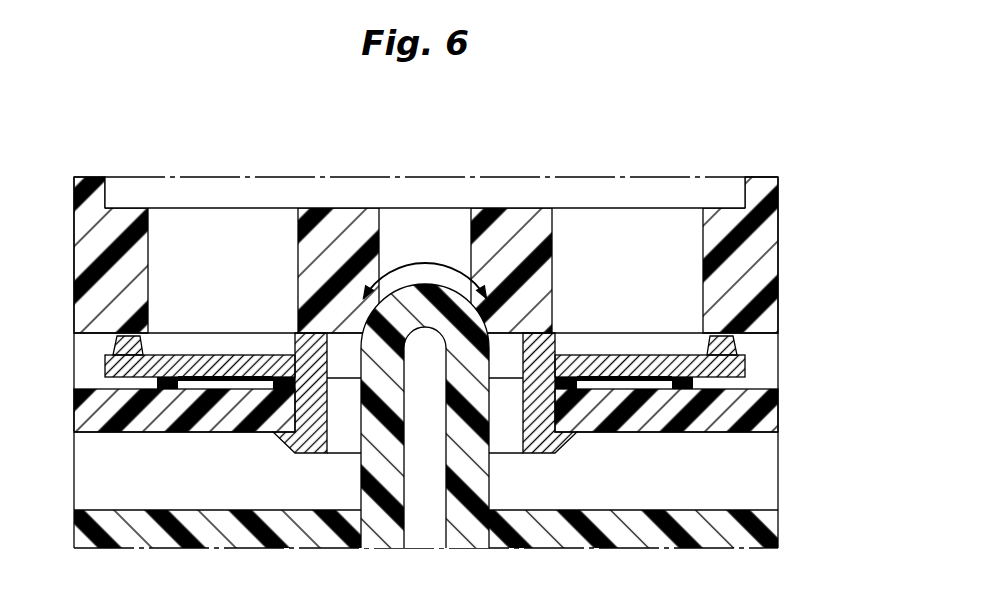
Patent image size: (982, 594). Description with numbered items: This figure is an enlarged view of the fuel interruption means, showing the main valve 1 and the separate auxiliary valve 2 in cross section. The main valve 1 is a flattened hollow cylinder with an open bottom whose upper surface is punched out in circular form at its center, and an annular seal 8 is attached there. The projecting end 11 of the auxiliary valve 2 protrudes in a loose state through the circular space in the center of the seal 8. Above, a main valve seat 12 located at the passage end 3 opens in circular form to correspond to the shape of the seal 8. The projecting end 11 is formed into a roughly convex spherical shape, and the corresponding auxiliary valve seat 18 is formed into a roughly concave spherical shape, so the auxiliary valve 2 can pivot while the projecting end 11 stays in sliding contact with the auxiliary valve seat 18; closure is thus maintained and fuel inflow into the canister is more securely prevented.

The main valve 1 is at (768, 417).
The auxiliary valve 2 is at (600, 520).
The passage end 3 is at (493, 192).
The annular seal 8 is at (746, 374).
The projecting end 11 is at (388, 368).
The main valve seat 12 is at (207, 338).
The auxiliary valve seat 18 is at (377, 312).